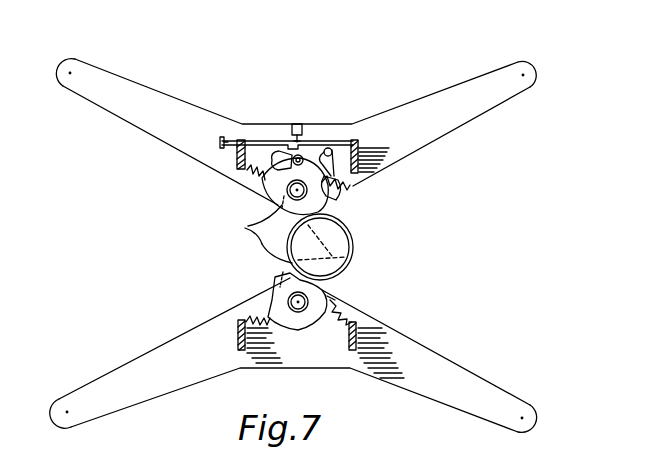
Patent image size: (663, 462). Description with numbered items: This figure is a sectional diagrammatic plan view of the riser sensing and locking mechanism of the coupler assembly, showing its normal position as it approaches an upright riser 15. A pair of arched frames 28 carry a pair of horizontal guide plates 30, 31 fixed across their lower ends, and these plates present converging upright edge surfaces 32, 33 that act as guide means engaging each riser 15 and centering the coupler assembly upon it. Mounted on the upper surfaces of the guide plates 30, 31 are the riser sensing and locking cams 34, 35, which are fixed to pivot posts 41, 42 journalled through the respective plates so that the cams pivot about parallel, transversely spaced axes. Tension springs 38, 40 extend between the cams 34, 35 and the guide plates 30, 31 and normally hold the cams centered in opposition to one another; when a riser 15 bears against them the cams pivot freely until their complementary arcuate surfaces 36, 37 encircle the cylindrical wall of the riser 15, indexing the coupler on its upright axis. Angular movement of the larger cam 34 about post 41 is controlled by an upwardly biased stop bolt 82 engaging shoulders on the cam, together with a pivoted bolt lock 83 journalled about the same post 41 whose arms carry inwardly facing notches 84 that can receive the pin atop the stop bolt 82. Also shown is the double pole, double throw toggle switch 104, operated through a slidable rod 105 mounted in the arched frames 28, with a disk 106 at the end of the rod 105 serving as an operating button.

The riser 15 is at (354, 248).
The arched frame 28 is at (363, 144).
The guide plate 30 is at (440, 138).
The guide plate 31 is at (437, 360).
The converging upright edge surface 32 is at (150, 139).
The converging upright edge surface 33 is at (124, 360).
The riser sensing and locking cam 34 is at (264, 247).
The riser sensing and locking cam 35 is at (330, 297).
The arcuate surface 36 is at (246, 227).
The arcuate surface 37 is at (322, 249).
The tension spring 38 is at (256, 181).
The tension spring 40 is at (258, 313).
The pivot post 41 is at (280, 199).
The pivot post 42 is at (290, 314).
The stop bolt 82 is at (305, 154).
The bolt lock 83 is at (344, 184).
The notch 84 is at (329, 162).
The toggle switch 104 is at (299, 125).
The slidable rod 105 is at (266, 138).
The disk 106 is at (220, 140).